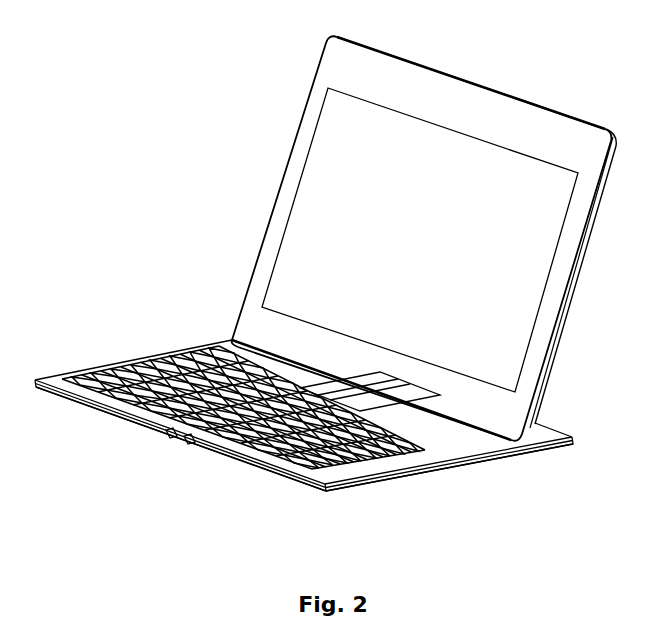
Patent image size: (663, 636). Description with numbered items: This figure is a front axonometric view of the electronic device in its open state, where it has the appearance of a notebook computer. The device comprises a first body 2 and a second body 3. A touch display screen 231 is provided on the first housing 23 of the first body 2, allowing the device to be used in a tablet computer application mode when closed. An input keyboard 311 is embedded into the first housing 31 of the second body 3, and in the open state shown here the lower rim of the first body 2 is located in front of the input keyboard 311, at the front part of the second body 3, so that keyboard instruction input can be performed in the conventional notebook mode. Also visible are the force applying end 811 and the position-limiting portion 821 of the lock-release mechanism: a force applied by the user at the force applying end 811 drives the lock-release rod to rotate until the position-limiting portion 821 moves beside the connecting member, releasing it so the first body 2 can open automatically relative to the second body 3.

The first body 2 is at (288, 65).
The first housing 23 is at (283, 187).
The touch display screen 231 is at (295, 253).
The second body 3 is at (290, 496).
The first housing 31 is at (475, 445).
The input keyboard 311 is at (363, 485).
The force applying end 811 is at (177, 438).
The position-limiting portion 821 is at (300, 398).